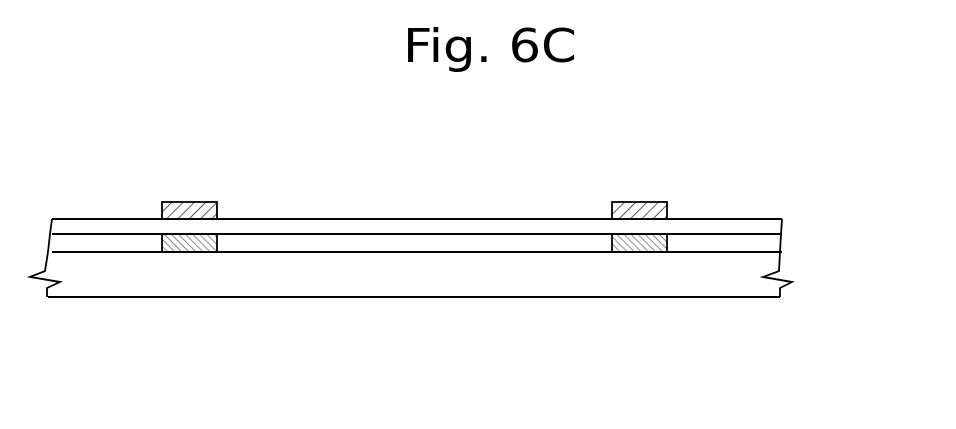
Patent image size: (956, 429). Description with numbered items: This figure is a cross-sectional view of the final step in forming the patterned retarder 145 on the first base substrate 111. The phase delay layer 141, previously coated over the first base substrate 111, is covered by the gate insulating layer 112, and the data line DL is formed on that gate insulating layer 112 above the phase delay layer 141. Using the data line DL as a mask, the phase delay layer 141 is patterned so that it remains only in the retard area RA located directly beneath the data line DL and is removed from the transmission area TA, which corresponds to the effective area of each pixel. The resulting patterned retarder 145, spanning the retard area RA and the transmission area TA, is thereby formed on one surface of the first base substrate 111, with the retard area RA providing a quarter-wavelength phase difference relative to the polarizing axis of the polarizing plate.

The gate insulating layer 112 is at (765, 228).
The phase delay layer 141 is at (763, 243).
The first base substrate 111 is at (765, 268).
The data line DL is at (190, 202).
The transmission area TA is at (563, 285).
The retard area RA is at (635, 252).
The patterned retarder 145 is at (660, 358).